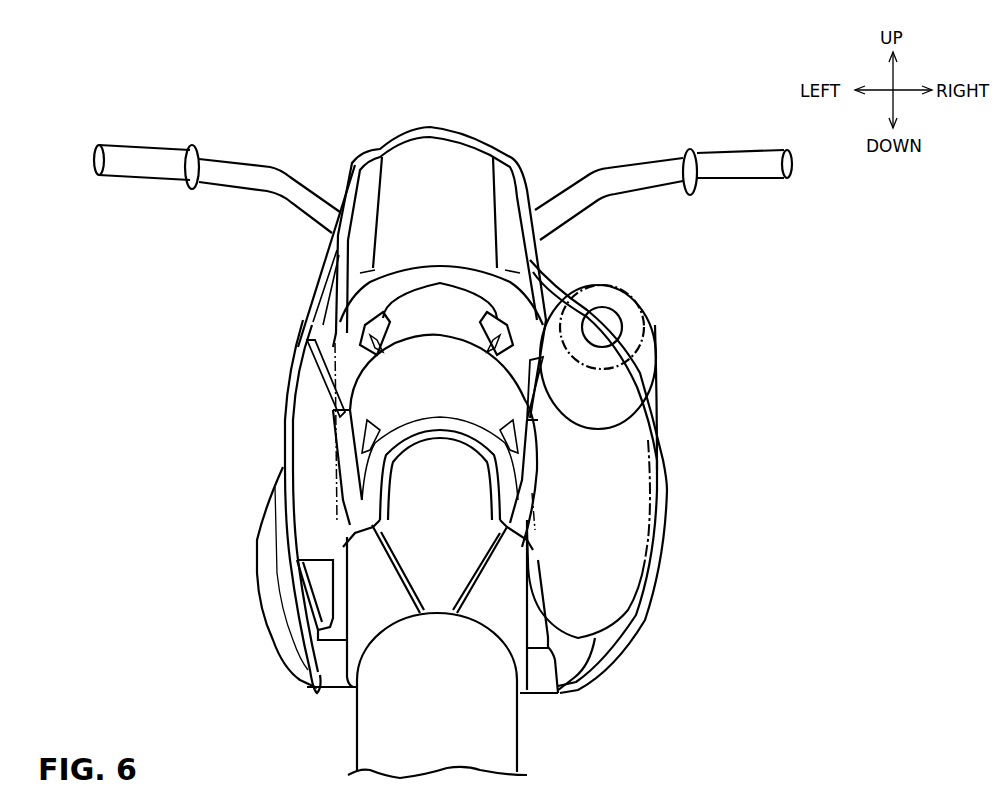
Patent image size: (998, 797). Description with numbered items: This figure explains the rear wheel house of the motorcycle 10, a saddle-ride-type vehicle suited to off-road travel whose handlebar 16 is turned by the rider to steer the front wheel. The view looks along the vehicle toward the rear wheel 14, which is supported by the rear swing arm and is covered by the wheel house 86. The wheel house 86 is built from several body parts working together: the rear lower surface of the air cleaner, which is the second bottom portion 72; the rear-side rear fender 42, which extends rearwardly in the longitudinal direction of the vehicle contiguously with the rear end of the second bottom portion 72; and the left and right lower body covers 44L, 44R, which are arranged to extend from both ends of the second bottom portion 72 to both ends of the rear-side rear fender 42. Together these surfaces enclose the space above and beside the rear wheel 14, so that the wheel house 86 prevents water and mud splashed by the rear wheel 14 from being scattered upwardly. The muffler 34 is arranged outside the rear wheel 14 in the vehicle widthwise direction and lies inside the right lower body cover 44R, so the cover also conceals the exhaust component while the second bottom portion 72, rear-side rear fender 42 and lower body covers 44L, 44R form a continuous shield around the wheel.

The motorcycle 10 is at (493, 124).
The handlebar 16 is at (630, 176).
The wheel house 86 is at (563, 280).
The rear-side rear fender 42 is at (432, 362).
The second bottom portion 72 is at (437, 505).
The left lower body cover 44L is at (285, 443).
The right lower body cover 44R is at (655, 428).
The muffler 34 is at (645, 475).
The rear wheel 14 is at (485, 725).